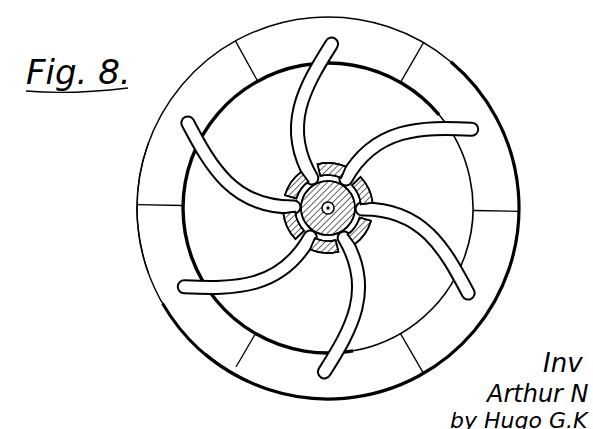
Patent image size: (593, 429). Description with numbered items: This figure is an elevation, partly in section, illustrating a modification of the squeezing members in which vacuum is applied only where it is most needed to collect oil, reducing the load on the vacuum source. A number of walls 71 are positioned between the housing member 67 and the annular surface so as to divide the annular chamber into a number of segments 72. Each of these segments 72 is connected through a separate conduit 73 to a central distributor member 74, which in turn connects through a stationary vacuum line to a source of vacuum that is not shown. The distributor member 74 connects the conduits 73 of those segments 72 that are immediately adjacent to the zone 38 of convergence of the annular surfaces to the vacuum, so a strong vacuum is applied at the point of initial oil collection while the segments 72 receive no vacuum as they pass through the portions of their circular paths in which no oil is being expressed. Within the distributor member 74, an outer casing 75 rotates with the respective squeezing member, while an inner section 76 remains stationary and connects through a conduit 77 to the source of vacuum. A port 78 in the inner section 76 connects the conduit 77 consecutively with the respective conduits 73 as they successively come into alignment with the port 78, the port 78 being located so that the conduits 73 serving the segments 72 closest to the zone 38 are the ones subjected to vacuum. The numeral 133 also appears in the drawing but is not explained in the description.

The zone of convergence 38 is at (140, 249).
The housing member 67 is at (495, 153).
The walls 71 is at (237, 41).
The segments 72 is at (202, 331).
The conduits 73 is at (210, 283).
The distributor member 74 is at (284, 217).
The outer casing 75 is at (313, 258).
The inner section 76 is at (368, 236).
The conduit 77 is at (370, 187).
The port 78 is at (292, 227).
The casing 133 is at (436, 0).